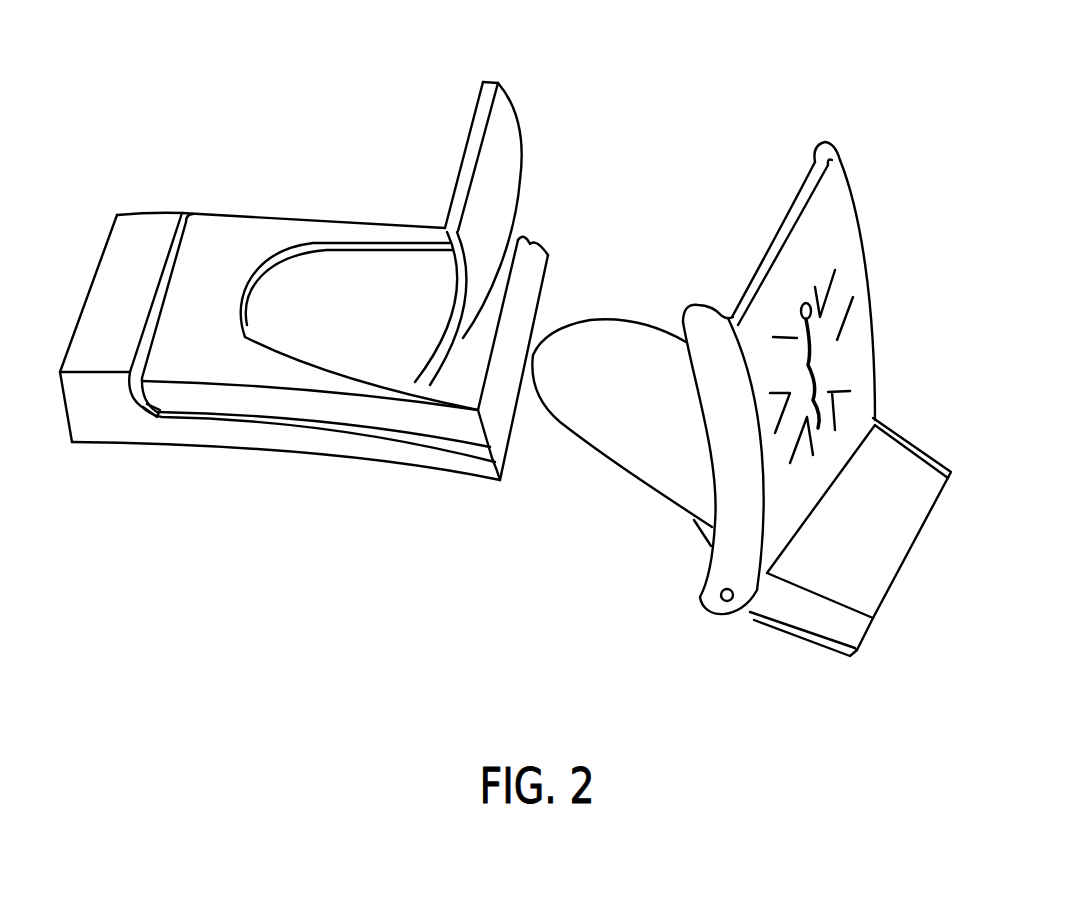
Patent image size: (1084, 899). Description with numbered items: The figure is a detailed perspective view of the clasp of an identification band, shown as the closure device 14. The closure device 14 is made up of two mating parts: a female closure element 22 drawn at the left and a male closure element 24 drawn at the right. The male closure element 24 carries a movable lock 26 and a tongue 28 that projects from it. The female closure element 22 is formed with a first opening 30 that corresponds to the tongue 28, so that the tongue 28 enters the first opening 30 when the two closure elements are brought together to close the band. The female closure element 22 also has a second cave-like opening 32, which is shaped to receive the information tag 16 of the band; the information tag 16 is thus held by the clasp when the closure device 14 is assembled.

The closure device 14 is at (667, 138).
The information tag 16 is at (517, 110).
The female closure element 22 is at (240, 450).
The male closure element 24 is at (780, 650).
The movable lock 26 is at (855, 205).
The tongue 28 is at (627, 470).
The first opening 30 is at (515, 418).
The second cave-like opening 32 is at (248, 303).